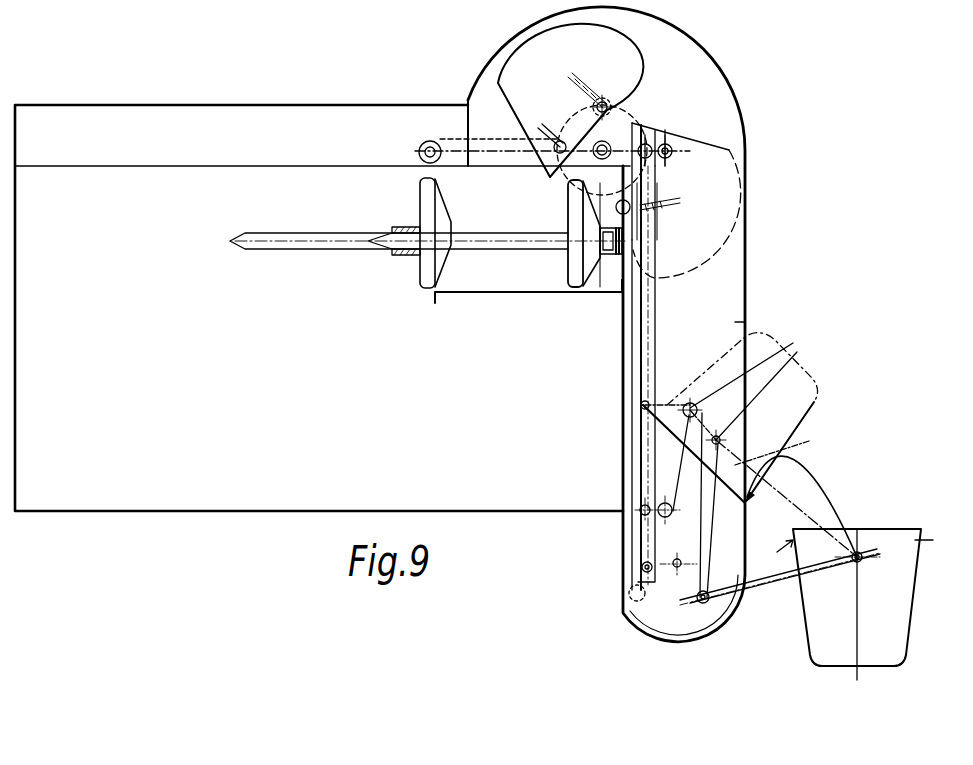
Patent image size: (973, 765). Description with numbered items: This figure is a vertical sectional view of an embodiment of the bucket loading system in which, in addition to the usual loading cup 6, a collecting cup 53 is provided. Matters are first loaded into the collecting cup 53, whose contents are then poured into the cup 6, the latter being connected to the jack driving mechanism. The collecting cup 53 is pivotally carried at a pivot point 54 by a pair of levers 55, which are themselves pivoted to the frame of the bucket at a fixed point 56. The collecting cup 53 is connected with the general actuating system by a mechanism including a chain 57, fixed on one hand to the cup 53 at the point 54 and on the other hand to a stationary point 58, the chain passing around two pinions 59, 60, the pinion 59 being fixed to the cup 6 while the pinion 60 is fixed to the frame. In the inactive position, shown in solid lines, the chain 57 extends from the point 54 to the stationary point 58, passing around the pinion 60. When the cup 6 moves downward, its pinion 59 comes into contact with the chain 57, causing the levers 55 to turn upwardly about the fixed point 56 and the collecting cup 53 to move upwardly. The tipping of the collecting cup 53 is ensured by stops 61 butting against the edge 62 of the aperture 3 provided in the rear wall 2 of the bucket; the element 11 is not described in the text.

The rear wall 2 is at (745, 255).
The loading apparatus 3 is at (742, 414).
The loading cup 6 is at (747, 530).
The spindle rod 11 is at (519, 238).
The collecting cup 53 is at (897, 530).
The pivot point 54 is at (857, 530).
The levers 55 is at (767, 580).
The fixed point 56 is at (695, 630).
The chain 57 is at (815, 482).
The stationary point 58 is at (640, 403).
The pinion 59 is at (668, 147).
The pinion 60 is at (688, 403).
The stops 61 is at (776, 553).
The edge of aperture 62 is at (768, 446).